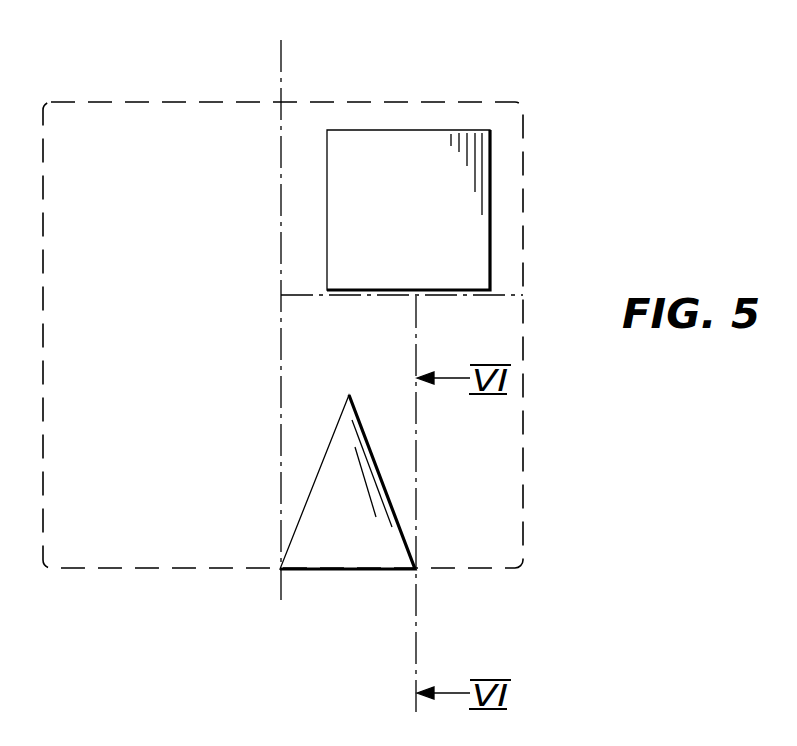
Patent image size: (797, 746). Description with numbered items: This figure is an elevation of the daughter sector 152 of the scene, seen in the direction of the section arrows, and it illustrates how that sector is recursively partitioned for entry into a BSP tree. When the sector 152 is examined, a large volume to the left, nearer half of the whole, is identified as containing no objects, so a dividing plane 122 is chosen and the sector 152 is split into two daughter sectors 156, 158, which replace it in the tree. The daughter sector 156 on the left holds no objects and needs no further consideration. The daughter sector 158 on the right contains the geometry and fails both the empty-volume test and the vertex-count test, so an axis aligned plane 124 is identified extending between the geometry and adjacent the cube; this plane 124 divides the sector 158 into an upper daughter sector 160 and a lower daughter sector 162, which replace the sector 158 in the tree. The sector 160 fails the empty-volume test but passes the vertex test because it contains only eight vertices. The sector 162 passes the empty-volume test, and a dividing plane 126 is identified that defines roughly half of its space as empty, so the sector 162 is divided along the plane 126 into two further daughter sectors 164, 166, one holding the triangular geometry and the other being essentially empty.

The dividing plane 122 is at (281, 70).
The axis aligned plane 124 is at (441, 297).
The dividing plane 126 is at (416, 478).
The daughter sector 152 is at (548, 517).
The daughter sector 156 is at (281, 96).
The daughter sector 158 is at (523, 96).
The daughter sector 160 is at (528, 103).
The daughter sector 162 is at (528, 296).
The daughter sector 164 is at (415, 580).
The daughter sector 166 is at (523, 580).